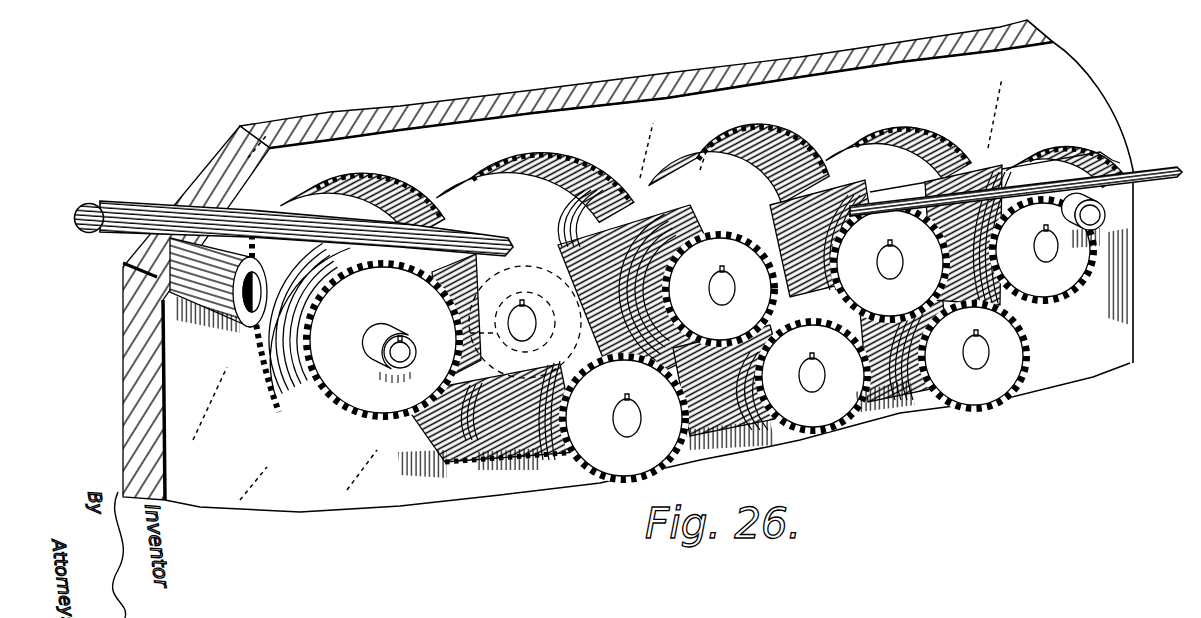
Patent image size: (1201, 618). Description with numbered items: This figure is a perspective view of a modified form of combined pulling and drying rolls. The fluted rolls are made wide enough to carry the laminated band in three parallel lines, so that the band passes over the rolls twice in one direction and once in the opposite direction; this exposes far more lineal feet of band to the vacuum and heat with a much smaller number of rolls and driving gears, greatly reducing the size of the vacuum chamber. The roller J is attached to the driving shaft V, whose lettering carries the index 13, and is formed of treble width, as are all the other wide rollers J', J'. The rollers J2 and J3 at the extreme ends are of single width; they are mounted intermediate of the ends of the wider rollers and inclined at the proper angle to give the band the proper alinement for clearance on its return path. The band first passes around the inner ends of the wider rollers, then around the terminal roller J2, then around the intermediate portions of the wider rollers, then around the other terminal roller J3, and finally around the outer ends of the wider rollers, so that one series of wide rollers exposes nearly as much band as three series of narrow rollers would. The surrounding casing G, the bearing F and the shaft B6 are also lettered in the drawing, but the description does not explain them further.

The driving shaft 13 is at (632, 84).
The driving shaft V is at (196, 313).
The casing G is at (1117, 338).
The shaft B6 is at (294, 236).
The bearing F is at (290, 397).
The terminal roller J3 is at (355, 395).
The roller J is at (596, 430).
The rollers J' is at (910, 312).
The terminal roller J2 is at (1113, 218).